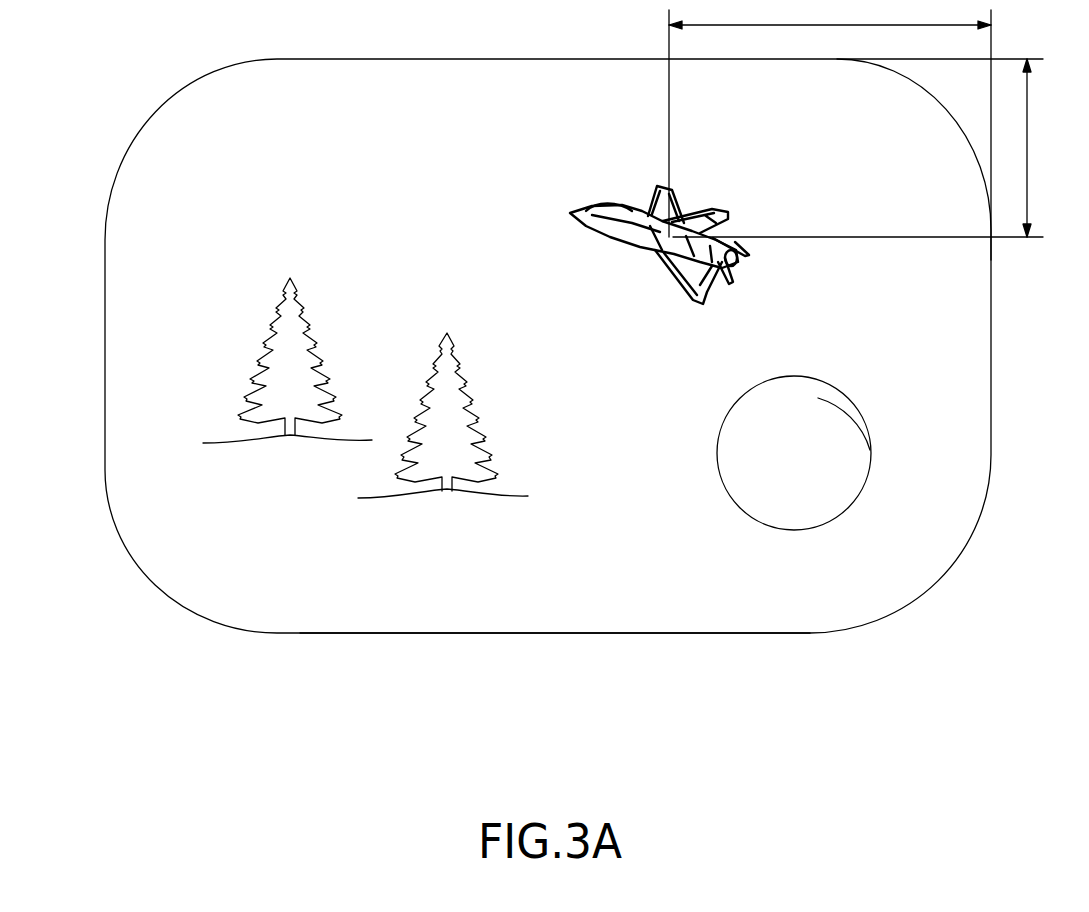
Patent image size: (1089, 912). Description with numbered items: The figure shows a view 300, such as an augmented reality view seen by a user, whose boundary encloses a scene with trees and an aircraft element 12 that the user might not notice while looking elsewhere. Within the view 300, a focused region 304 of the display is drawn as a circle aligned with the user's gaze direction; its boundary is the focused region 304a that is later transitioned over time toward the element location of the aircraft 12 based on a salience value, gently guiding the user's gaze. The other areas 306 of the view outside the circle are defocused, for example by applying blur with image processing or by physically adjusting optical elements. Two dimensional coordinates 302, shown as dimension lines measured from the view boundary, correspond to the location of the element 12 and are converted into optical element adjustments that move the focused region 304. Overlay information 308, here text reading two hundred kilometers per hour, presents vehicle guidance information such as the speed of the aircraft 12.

The view 300 is at (328, 58).
The two dimensional coordinates 302 is at (869, 130).
The focused region 304 is at (835, 407).
The focused region 304a is at (847, 432).
The defocused areas 306 is at (787, 613).
The overlay information 308 is at (781, 205).
The aircraft element 12 is at (598, 208).